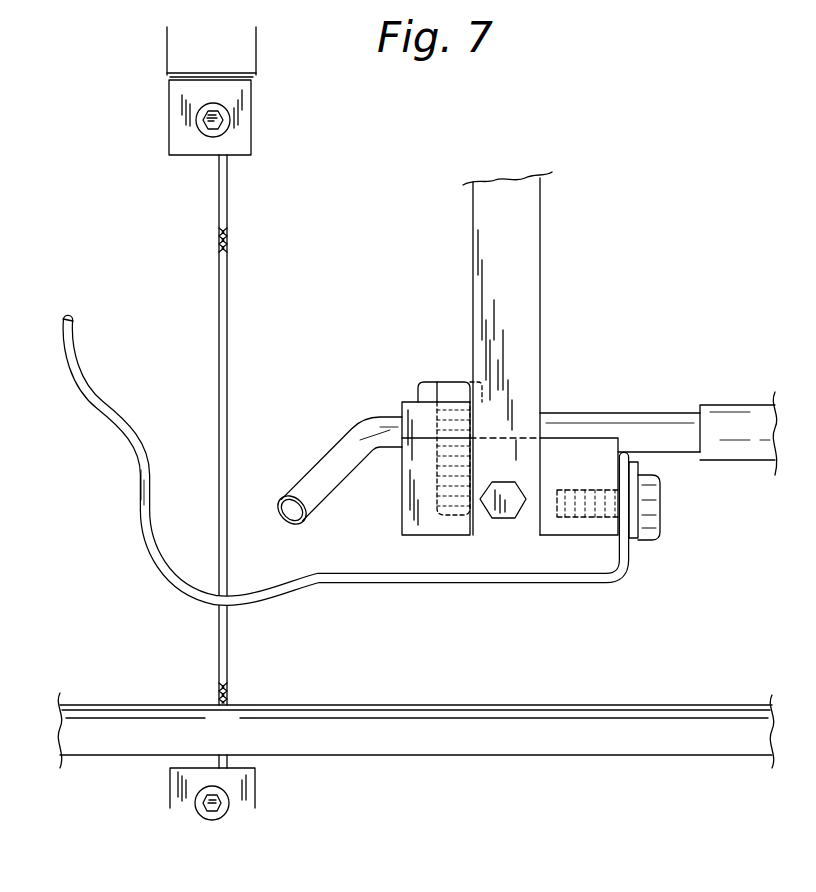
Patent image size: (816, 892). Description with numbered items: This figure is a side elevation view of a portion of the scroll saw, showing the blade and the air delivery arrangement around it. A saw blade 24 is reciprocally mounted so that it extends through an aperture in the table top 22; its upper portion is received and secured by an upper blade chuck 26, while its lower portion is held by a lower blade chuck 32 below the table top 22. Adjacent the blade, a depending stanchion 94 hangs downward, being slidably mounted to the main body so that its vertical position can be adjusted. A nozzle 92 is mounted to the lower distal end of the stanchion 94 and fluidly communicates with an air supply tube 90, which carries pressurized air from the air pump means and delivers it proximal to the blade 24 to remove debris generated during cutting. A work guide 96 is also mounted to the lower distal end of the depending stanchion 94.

The table top 22 is at (132, 718).
The saw blade 24 is at (223, 191).
The upper blade chuck 26 is at (182, 58).
The lower blade chuck 32 is at (170, 778).
The air supply tube 90 is at (743, 410).
The nozzle 92 is at (353, 432).
The depending stanchion 94 is at (518, 232).
The work guide 96 is at (103, 397).